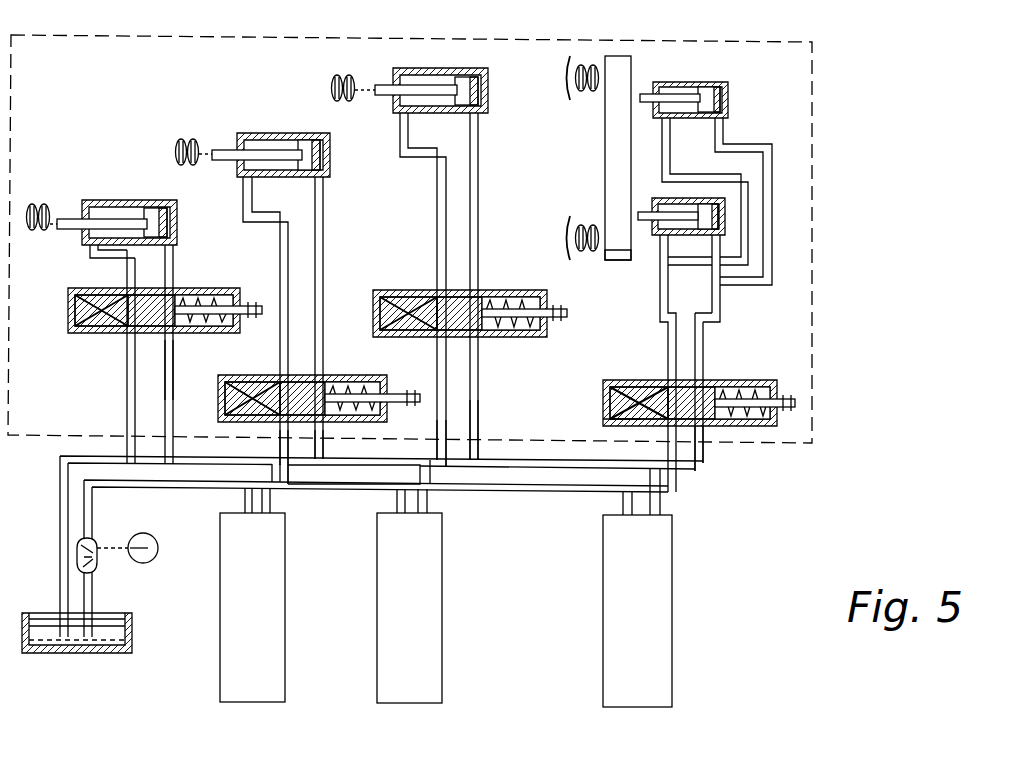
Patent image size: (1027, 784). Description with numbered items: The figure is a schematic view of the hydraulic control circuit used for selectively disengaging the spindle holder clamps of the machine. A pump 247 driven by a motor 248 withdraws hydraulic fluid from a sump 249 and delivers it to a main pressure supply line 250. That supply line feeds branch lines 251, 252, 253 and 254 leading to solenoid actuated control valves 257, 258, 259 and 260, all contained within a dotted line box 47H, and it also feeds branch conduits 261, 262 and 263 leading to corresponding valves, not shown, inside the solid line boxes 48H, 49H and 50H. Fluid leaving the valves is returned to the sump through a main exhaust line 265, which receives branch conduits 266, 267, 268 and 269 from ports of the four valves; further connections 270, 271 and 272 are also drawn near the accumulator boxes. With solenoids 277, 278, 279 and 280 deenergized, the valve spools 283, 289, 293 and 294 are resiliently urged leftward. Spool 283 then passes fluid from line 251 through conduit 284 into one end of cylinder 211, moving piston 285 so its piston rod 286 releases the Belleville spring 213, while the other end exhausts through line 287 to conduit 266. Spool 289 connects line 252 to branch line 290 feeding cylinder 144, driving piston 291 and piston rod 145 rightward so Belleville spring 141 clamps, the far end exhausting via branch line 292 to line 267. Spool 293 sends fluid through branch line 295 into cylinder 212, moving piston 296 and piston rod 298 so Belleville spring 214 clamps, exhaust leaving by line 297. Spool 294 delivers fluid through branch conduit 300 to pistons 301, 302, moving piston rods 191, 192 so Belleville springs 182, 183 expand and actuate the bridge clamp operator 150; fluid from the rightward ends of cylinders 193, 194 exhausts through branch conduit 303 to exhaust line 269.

The dotted line box 47H is at (236, 33).
The solid line box 48H is at (276, 710).
The solid line box 49H is at (432, 710).
The solid line box 50H is at (656, 714).
The Belleville spring 141 is at (180, 130).
The cylinder 144 is at (296, 128).
The piston rod 145 is at (230, 150).
The bridge clamp operator 150 is at (632, 66).
The Belleville spring 182 is at (582, 102).
The Belleville spring 183 is at (586, 222).
The piston rod 191 is at (655, 94).
The piston rod 192 is at (652, 206).
The cylinder 193 is at (732, 96).
The cylinder 194 is at (632, 262).
The cylinder 211 is at (121, 197).
The cylinder 212 is at (492, 70).
The Belleville spring 213 is at (46, 203).
The Belleville spring 214 is at (340, 74).
The pump 247 is at (97, 566).
The motor 248 is at (158, 552).
The sump 249 is at (100, 653).
The main pressure supply line 250 is at (332, 488).
The branch line 251 is at (127, 410).
The branch line 252 is at (280, 447).
The branch line 253 is at (437, 436).
The branch line 254 is at (660, 427).
The solenoid actuated control valve 257 is at (146, 311).
The solenoid actuated control valve 258 is at (298, 380).
The solenoid actuated control valve 259 is at (477, 296).
The solenoid actuated control valve 260 is at (702, 391).
The branch conduit 261 is at (245, 499).
The branch conduit 262 is at (397, 506).
The branch conduit 263 is at (623, 505).
The main exhaust line 265 is at (554, 462).
The branch exhaust conduit 266 is at (174, 354).
The branch line 267 is at (324, 452).
The branch conduit 268 is at (479, 412).
The branch exhaust line 269 is at (704, 452).
The connecting line 270 is at (272, 473).
The accumulator line 271 is at (428, 502).
The accumulator line 272 is at (661, 505).
The solenoid 277 is at (252, 320).
The solenoid 278 is at (414, 392).
The solenoid 279 is at (568, 308).
The solenoid 280 is at (796, 392).
The valve spool 283 is at (68, 309).
The conduit 284 is at (94, 260).
The piston 285 is at (158, 208).
The piston rod 286 is at (70, 230).
The line 287 is at (174, 260).
The valve spool 289 is at (218, 407).
The branch line 290 is at (243, 210).
The piston 291 is at (330, 156).
The branch line 292 is at (324, 222).
The valve spool 293 is at (373, 315).
The valve spool 294 is at (610, 398).
The branch line 295 is at (437, 189).
The piston 296 is at (466, 80).
The line 297 is at (479, 168).
The piston rod 298 is at (386, 86).
The branch conduit 300 is at (670, 165).
The piston 301 is at (712, 88).
The piston 302 is at (690, 251).
The branch conduit 303 is at (765, 284).